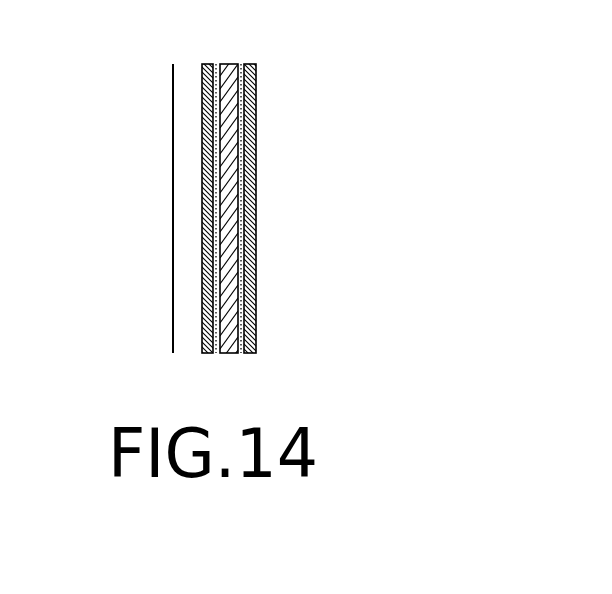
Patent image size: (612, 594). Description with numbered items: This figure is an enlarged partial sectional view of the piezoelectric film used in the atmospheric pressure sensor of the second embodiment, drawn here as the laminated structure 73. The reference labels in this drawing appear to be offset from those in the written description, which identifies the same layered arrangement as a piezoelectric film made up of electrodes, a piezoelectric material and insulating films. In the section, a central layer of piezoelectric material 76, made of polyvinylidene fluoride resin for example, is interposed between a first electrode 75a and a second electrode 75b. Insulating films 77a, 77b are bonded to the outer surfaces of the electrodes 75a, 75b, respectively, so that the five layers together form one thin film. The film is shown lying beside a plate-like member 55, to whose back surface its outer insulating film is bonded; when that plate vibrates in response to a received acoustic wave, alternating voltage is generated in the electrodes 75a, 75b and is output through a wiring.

The casing 55 is at (180, 112).
The laminated layer structure 73 is at (302, 95).
The first adhesive layer 75a is at (216, 209).
The second adhesive layer 75b is at (240, 228).
The core layer 76 is at (228, 167).
The first surface layer 77a is at (205, 270).
The second surface layer 77b is at (252, 295).